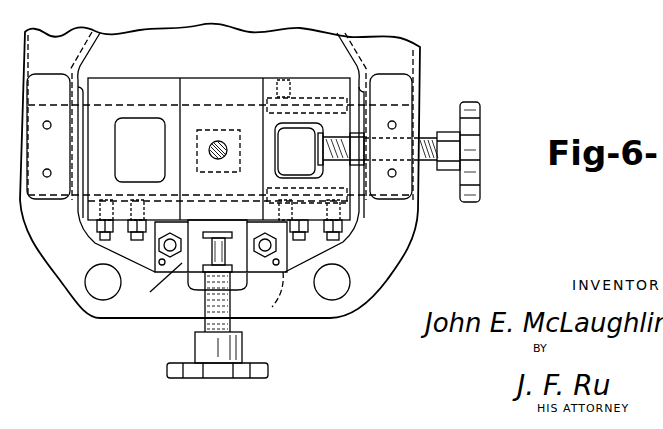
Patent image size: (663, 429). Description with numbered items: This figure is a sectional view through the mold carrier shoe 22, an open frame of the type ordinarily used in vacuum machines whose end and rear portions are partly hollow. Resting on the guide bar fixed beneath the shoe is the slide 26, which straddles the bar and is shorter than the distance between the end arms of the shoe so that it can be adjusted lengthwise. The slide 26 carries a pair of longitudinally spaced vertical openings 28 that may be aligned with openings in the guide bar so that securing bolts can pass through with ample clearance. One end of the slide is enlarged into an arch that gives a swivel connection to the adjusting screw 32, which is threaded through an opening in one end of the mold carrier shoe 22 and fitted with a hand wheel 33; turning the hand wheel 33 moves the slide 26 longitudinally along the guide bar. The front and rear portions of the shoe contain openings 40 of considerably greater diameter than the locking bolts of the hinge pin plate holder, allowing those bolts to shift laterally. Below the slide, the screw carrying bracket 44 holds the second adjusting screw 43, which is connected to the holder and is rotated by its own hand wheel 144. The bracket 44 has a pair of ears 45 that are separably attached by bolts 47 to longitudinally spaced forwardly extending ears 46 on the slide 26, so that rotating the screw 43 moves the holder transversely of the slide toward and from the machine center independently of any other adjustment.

The mold carrier shoe 22 is at (407, 48).
The slide 26 is at (230, 104).
The vertical openings 28 is at (147, 153).
The adjusting screw 32 is at (427, 133).
The hand wheel 33 is at (473, 132).
The openings 40 is at (88, 290).
The adjusting screw 43 is at (207, 325).
The screw carrying bracket 44 is at (283, 307).
The ears 45 is at (200, 275).
The forwardly extending ears 46 is at (153, 286).
The bolts 47 is at (160, 249).
The hand wheel 144 is at (173, 377).